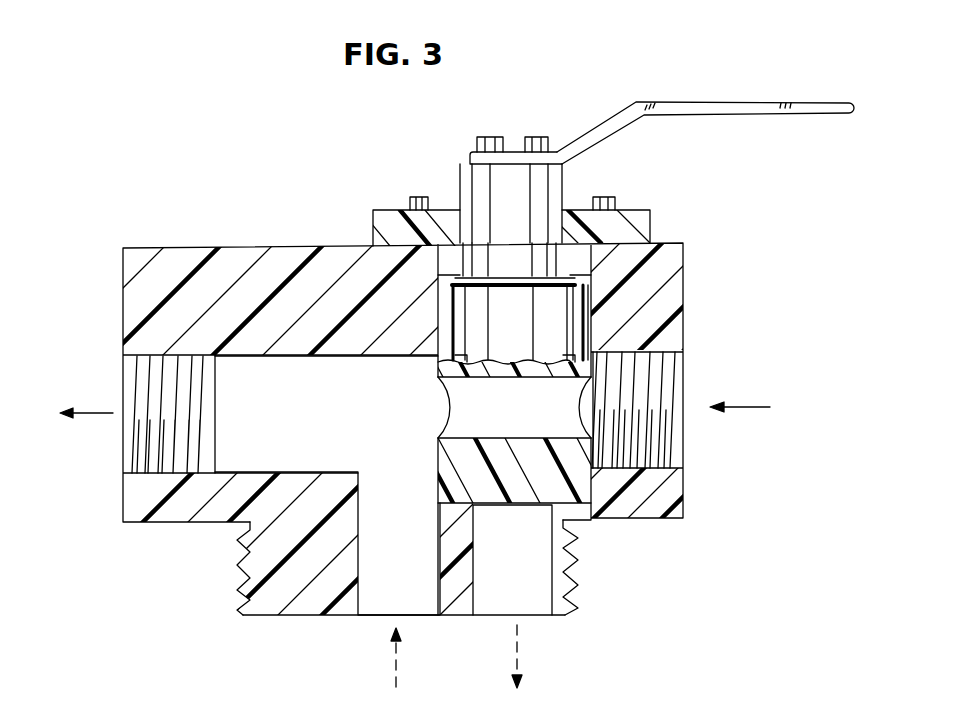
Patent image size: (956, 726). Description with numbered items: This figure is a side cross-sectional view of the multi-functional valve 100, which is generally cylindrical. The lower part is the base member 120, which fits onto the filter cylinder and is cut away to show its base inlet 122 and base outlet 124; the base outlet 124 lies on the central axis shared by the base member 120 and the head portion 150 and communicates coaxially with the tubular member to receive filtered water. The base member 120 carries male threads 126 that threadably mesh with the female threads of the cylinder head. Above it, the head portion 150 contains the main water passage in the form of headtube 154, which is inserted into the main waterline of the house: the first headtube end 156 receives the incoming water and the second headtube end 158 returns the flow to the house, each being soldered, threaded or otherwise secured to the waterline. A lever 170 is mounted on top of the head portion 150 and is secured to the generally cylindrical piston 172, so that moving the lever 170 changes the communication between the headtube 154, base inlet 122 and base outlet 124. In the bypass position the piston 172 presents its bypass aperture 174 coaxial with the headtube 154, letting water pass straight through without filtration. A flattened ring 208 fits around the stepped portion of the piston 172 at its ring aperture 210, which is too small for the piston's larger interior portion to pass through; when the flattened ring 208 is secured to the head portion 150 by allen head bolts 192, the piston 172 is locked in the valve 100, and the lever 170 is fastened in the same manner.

The multi-functional valve 100 is at (215, 186).
The base member 120 is at (293, 618).
The base inlet 122 is at (530, 592).
The base outlet 124 is at (410, 600).
The male threads 126 is at (240, 578).
The head portion 150 is at (123, 297).
The headtube 154 is at (340, 412).
The first headtube end 156 is at (698, 458).
The second headtube end 158 is at (123, 457).
The lever 170 is at (797, 115).
The piston 172 is at (446, 173).
The bypass aperture 174 is at (530, 420).
The allen head bolts 192 is at (606, 197).
The flattened ring 208 is at (650, 226).
The ring aperture 210 is at (458, 207).